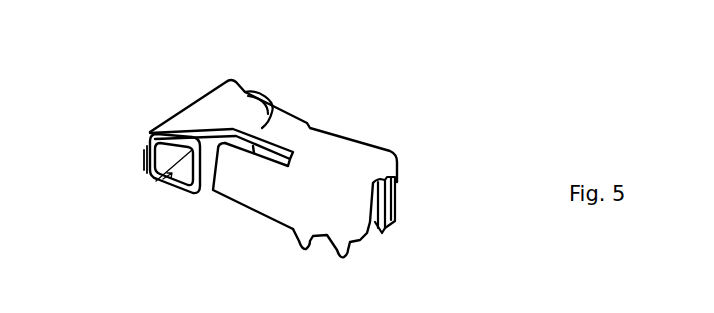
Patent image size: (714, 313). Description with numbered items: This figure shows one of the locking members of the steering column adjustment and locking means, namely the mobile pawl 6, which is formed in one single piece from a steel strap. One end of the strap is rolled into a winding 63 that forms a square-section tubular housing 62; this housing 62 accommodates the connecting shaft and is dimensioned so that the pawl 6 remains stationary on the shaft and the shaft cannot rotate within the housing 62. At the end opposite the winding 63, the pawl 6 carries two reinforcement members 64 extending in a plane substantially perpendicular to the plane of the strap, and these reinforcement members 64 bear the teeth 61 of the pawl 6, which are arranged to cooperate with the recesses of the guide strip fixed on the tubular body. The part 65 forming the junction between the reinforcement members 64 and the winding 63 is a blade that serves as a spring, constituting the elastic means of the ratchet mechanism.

The mobile pawl 6 is at (379, 127).
The teeth 61 is at (349, 253).
The square-section tubular housing 62 is at (157, 183).
The winding 63 is at (148, 126).
The reinforcement members 64 is at (359, 221).
The spring blade 65 is at (262, 128).